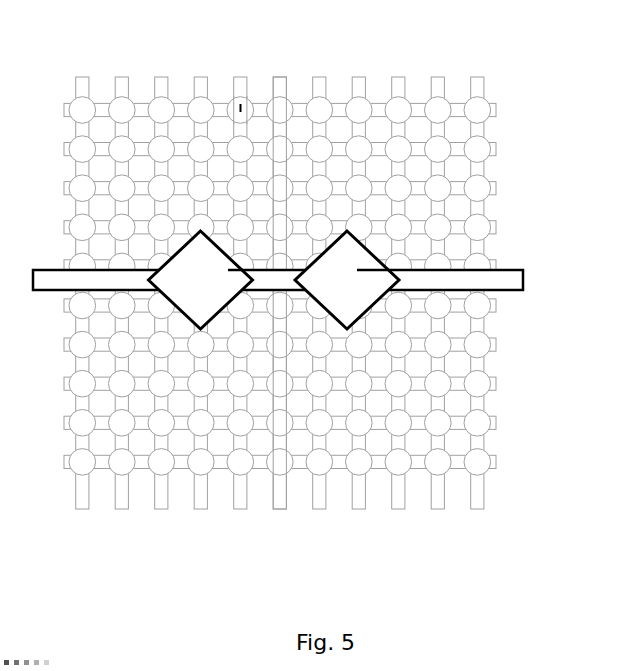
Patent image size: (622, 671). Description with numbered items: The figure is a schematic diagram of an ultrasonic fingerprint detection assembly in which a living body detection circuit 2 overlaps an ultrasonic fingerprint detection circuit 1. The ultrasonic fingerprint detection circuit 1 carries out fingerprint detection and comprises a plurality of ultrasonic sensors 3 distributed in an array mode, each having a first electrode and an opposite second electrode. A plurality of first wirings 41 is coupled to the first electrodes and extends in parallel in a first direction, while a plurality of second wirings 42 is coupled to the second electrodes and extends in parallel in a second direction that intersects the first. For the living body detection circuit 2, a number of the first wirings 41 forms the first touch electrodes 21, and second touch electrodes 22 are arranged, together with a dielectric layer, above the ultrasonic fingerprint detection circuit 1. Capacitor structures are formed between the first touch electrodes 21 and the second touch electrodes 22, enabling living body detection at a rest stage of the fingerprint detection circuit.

The ultrasonic fingerprint detection circuit 1 is at (322, 293).
The living body detection circuit 2 is at (349, 253).
The ultrasonic sensors 3 is at (315, 286).
The first touch electrodes 21 is at (334, 256).
The second touch electrodes 22 is at (294, 253).
The first wirings 41 is at (325, 293).
The second wirings 42 is at (322, 285).